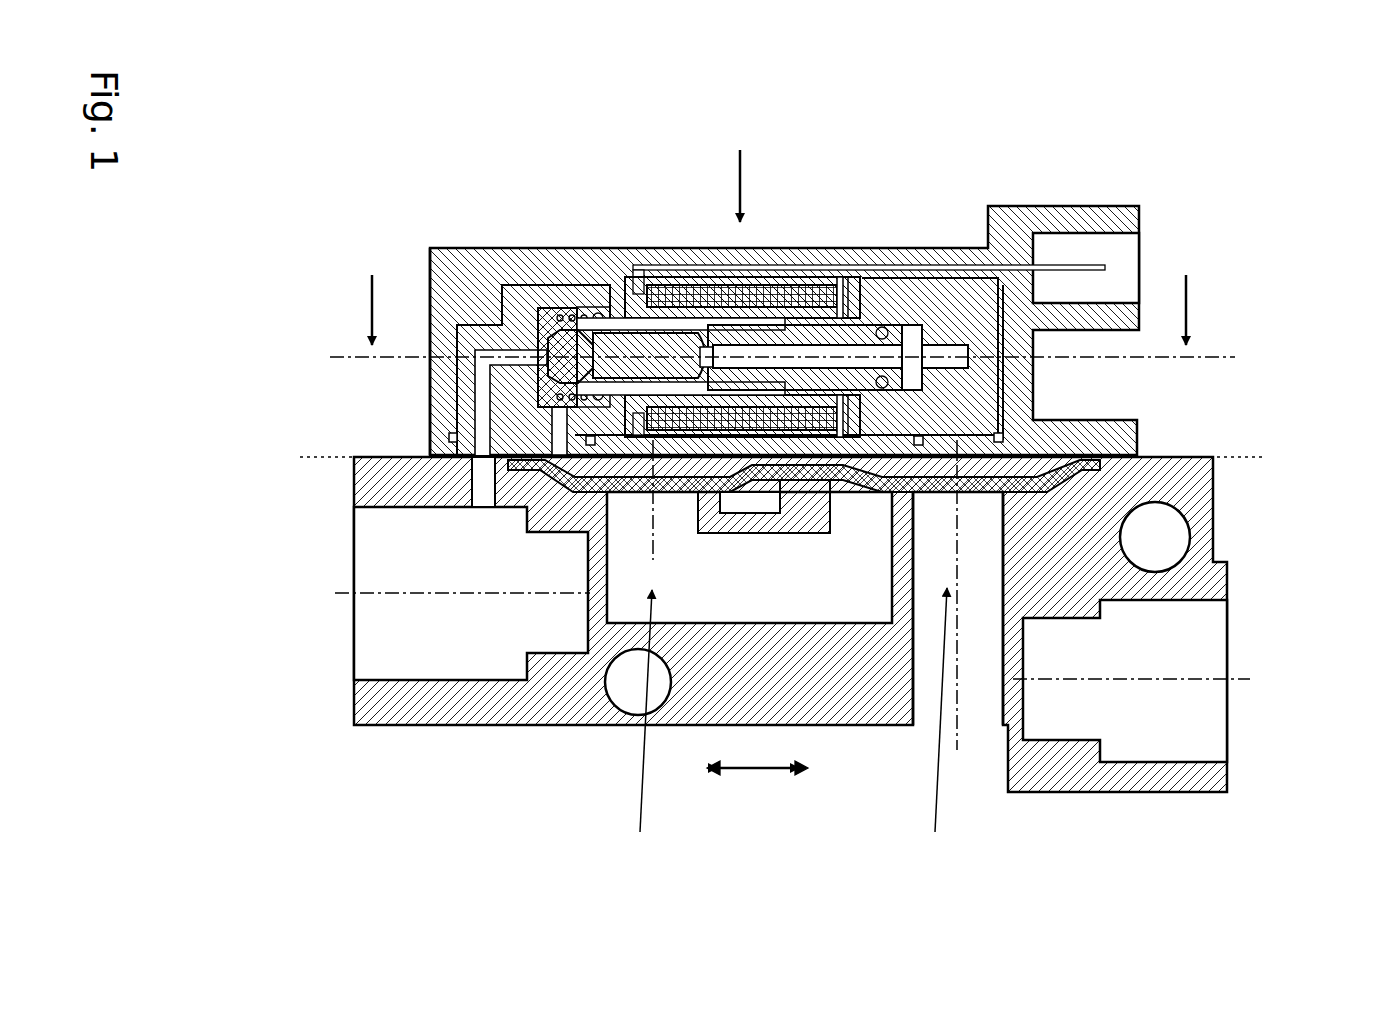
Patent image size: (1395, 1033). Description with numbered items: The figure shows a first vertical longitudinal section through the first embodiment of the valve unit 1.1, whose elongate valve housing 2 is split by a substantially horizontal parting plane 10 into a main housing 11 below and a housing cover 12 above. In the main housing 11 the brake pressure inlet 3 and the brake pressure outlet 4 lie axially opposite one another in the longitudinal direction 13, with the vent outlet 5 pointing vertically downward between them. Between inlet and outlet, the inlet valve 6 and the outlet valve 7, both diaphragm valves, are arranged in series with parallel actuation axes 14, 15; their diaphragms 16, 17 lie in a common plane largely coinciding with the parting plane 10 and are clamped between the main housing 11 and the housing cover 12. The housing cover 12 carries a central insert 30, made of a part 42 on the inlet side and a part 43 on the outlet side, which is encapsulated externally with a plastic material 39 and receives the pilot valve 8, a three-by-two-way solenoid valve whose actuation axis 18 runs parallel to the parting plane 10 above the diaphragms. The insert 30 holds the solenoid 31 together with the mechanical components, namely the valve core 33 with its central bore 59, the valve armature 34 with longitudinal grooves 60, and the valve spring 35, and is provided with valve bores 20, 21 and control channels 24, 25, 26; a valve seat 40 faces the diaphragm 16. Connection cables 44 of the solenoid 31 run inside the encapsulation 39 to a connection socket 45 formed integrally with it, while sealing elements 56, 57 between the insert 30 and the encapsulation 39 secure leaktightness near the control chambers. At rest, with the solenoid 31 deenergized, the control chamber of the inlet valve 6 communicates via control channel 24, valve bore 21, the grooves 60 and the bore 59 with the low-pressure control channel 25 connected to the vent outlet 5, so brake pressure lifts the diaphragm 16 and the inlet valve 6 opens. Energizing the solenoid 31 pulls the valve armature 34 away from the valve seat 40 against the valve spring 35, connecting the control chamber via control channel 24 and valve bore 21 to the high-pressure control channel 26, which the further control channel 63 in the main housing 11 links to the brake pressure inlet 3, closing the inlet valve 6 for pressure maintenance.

The valve unit 1.1 is at (265, 199).
The valve housing 2 is at (784, 487).
The housing cover 12 is at (450, 288).
The main housing 11 is at (565, 695).
The brake pressure inlet 3 is at (440, 643).
The brake pressure outlet 4 is at (1163, 715).
The vent outlet 5 is at (982, 660).
The inlet valve 6 is at (635, 651).
The outlet valve 7 is at (930, 725).
The pilot valve 8 is at (740, 166).
The parting plane 10 is at (293, 457).
The longitudinal direction 13 is at (757, 781).
The actuation axis 14 is at (655, 548).
The actuation axis 15 is at (957, 543).
The diaphragm 16 is at (567, 487).
The diaphragm 17 is at (1037, 483).
The actuation axis 18 is at (810, 353).
The valve bore 20 is at (910, 337).
The valve bore 21 is at (562, 338).
The control channel 24 is at (558, 430).
The control channel 25 is at (950, 350).
The control channel 26 is at (483, 388).
The insert 30 is at (904, 275).
The solenoid 31 is at (778, 295).
The valve core 33 is at (852, 330).
The valve armature 34 is at (663, 343).
The valve spring 35 is at (580, 310).
The plastic material 39 is at (450, 288).
The valve seat 40 is at (520, 307).
The part on the inlet side 42 is at (547, 313).
The part on the outlet side 43 is at (953, 402).
The connection cable 44 is at (703, 265).
The connection socket 45 is at (1113, 252).
The sealing element 56 is at (925, 438).
The sealing element 57 is at (1005, 437).
The central bore 59 is at (865, 347).
The longitudinal grooves 60 is at (617, 322).
The control channel 63 is at (483, 482).